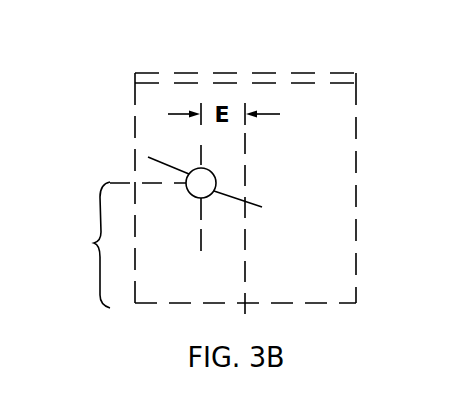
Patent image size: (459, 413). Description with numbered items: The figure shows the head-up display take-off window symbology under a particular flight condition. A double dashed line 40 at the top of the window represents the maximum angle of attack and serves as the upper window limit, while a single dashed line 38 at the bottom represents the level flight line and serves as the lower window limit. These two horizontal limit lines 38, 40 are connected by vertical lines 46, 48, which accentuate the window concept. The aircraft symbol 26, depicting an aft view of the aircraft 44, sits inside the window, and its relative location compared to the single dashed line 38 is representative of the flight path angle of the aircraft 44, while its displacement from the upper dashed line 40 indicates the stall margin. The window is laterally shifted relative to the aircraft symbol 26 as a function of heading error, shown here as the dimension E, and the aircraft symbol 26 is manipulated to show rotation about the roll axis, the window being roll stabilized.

The double dashed line 40 is at (323, 80).
The vertical line 48 is at (357, 143).
The vertical line 46 is at (135, 117).
The single dashed line 38 is at (302, 305).
The aircraft symbol 26 is at (208, 180).
The aircraft 44 is at (93, 242).